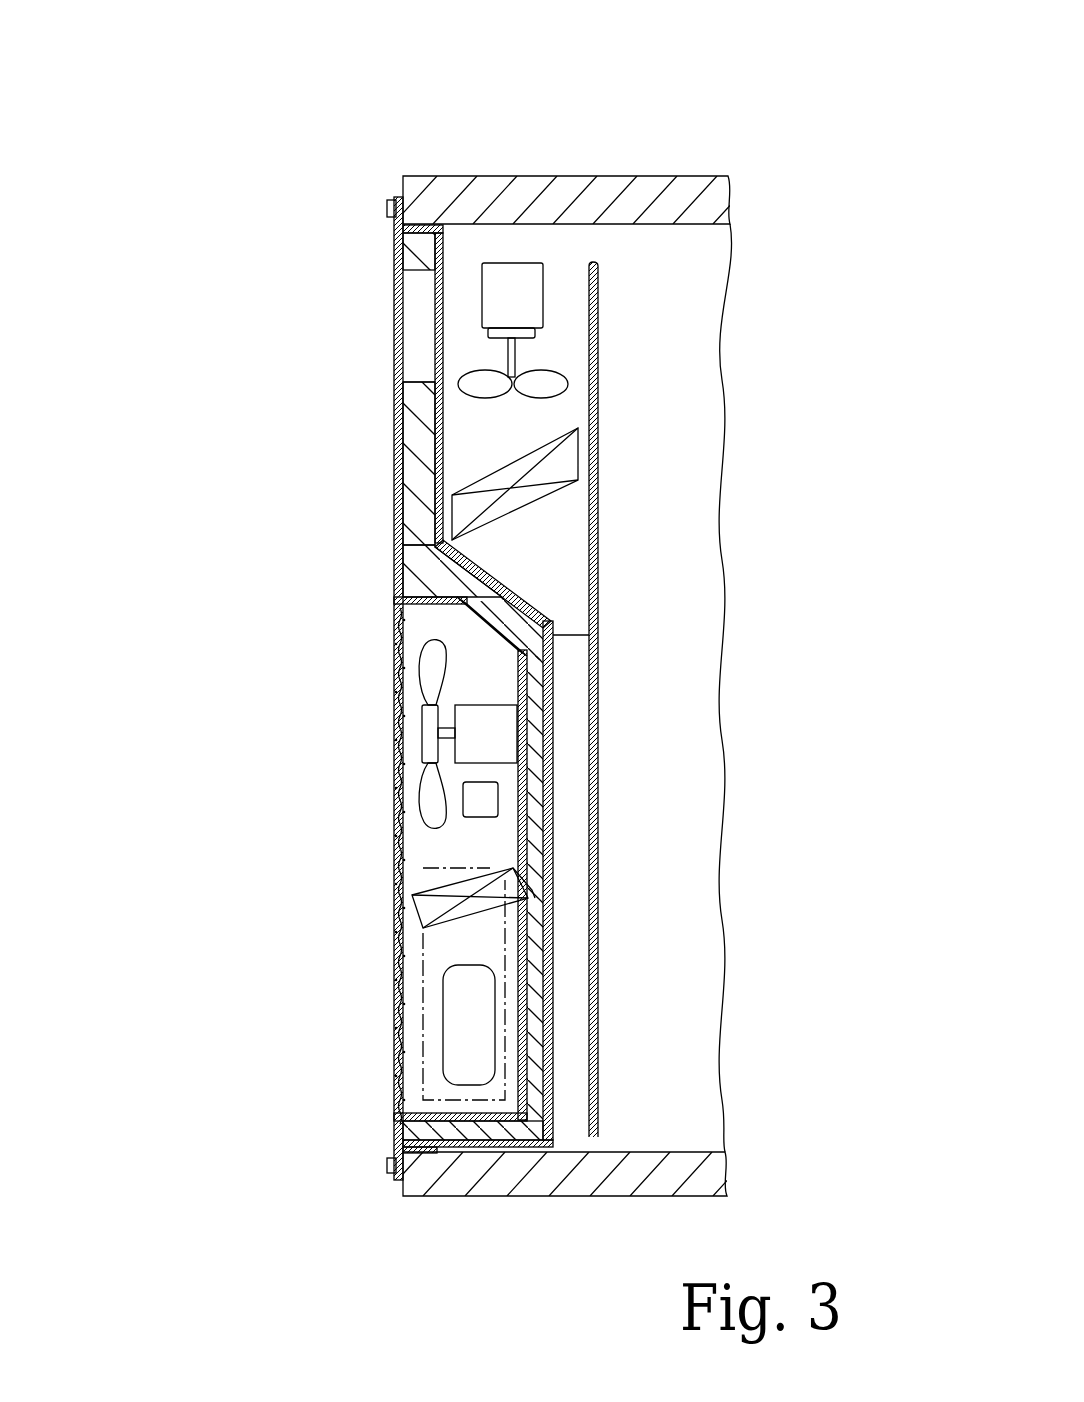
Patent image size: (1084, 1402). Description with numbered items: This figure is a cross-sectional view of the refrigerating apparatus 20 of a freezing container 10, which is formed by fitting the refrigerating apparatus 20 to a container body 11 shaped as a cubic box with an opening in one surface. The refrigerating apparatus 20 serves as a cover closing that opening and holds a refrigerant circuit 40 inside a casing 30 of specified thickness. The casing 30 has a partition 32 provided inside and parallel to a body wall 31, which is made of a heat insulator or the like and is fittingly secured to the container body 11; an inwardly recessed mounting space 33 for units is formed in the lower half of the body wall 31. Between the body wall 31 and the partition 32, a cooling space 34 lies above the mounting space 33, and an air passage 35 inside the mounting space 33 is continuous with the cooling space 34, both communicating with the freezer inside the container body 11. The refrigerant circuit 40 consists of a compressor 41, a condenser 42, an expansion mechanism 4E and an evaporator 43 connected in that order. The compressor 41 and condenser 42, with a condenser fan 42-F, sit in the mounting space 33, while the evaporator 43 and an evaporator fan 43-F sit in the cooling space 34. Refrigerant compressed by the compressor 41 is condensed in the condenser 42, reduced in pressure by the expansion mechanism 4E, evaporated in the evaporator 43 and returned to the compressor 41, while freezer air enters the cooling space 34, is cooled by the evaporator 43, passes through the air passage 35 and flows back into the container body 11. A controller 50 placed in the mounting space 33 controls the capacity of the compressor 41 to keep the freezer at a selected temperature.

The freezing container 10 is at (332, 46).
The container body 11 is at (662, 176).
The refrigerating apparatus 20 is at (382, 538).
The casing 30 is at (630, 668).
The body wall 31 is at (535, 827).
The partition 32 is at (595, 385).
The mounting space 33 is at (540, 858).
The cooling space 34 is at (467, 420).
The air passage 35 is at (567, 1015).
The refrigerant circuit 40 is at (383, 922).
The compressor 41 is at (445, 1027).
The condenser 42 is at (522, 851).
The condenser fan 42-F is at (435, 665).
The evaporator 43 is at (537, 498).
The evaporator fan 43-F is at (512, 263).
The expansion mechanism 4E is at (468, 800).
The controller 50 is at (400, 1078).